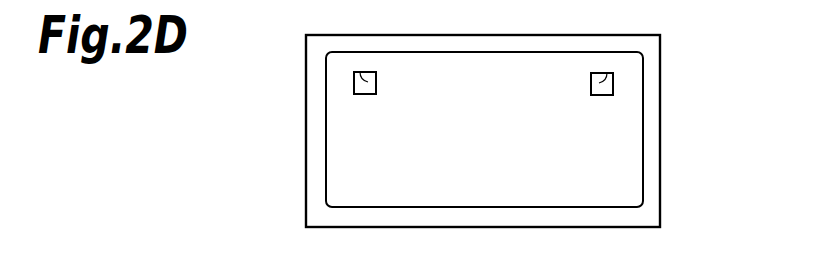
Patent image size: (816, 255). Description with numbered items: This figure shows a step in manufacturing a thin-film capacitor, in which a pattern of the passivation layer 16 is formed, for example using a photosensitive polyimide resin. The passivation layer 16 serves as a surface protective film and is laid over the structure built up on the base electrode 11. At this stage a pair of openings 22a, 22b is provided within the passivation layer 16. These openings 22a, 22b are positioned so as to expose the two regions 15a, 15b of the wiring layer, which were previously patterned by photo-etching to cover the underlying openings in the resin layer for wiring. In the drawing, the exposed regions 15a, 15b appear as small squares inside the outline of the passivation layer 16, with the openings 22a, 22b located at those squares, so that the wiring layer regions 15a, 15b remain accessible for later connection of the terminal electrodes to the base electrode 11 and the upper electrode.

The base electrode 11 is at (652, 200).
The passivation layer 16 is at (609, 144).
The region of the wiring layer 15a is at (376, 83).
The region of the wiring layer 15b is at (591, 82).
The opening 22a is at (354, 84).
The opening 22b is at (613, 82).